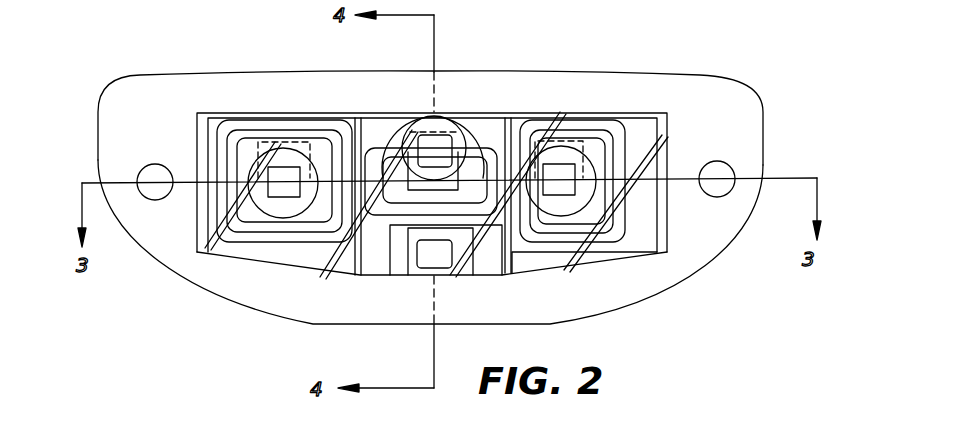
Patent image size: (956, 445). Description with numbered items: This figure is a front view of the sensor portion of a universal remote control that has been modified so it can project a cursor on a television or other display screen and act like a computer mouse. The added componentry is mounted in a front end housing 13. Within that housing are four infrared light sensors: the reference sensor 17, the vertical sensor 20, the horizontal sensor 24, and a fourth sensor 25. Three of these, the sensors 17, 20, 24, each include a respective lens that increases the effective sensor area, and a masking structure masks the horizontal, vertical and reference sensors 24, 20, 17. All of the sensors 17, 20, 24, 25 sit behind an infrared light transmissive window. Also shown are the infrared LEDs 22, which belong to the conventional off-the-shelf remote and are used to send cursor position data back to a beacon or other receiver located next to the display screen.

The front end housing 13 is at (191, 74).
The reference sensor 17 is at (293, 157).
The vertical sensor 20 is at (455, 145).
The infrared LEDs 22 is at (160, 190).
The horizontal sensor 24 is at (573, 157).
The infrared light sensor 25 is at (463, 262).